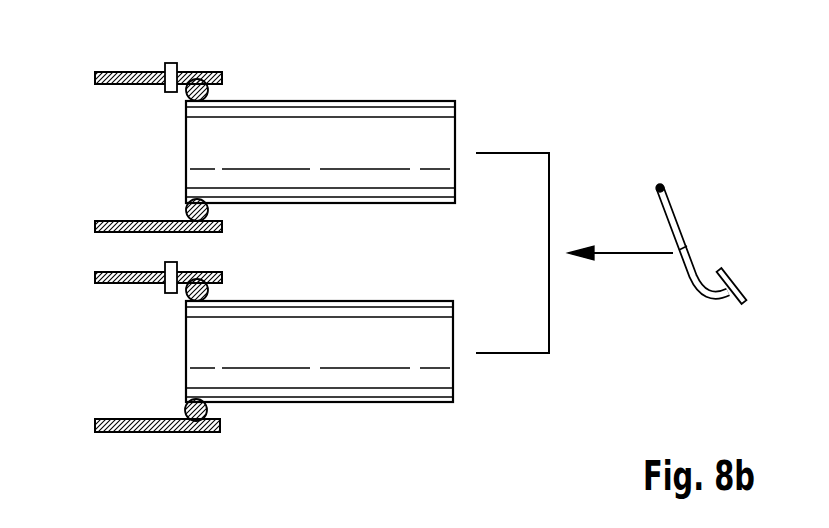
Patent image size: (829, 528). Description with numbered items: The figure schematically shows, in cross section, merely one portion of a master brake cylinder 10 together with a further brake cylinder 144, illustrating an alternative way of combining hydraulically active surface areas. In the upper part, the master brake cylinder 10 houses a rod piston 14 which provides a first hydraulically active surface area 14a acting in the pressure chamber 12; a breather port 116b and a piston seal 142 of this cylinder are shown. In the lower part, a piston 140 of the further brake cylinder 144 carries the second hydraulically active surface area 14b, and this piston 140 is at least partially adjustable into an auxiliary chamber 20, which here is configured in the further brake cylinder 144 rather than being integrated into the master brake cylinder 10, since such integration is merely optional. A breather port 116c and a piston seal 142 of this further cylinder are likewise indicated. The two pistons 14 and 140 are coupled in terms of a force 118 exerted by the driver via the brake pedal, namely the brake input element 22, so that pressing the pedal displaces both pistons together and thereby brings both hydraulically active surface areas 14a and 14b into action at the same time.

The master brake cylinder 10 is at (122, 72).
The pressure chamber 12 is at (110, 102).
The rod piston 14 is at (302, 125).
The first hydraulically active surface area 14a is at (186, 149).
The second hydraulically active surface area 14b is at (186, 348).
The auxiliary chamber 20 is at (110, 302).
The brake input element 22 is at (672, 218).
The breather port 116b is at (168, 65).
The breather port 116c is at (178, 266).
The force 118 is at (632, 255).
The piston 140 is at (303, 378).
The piston seal 142 is at (197, 78).
The further brake cylinder 144 is at (138, 433).